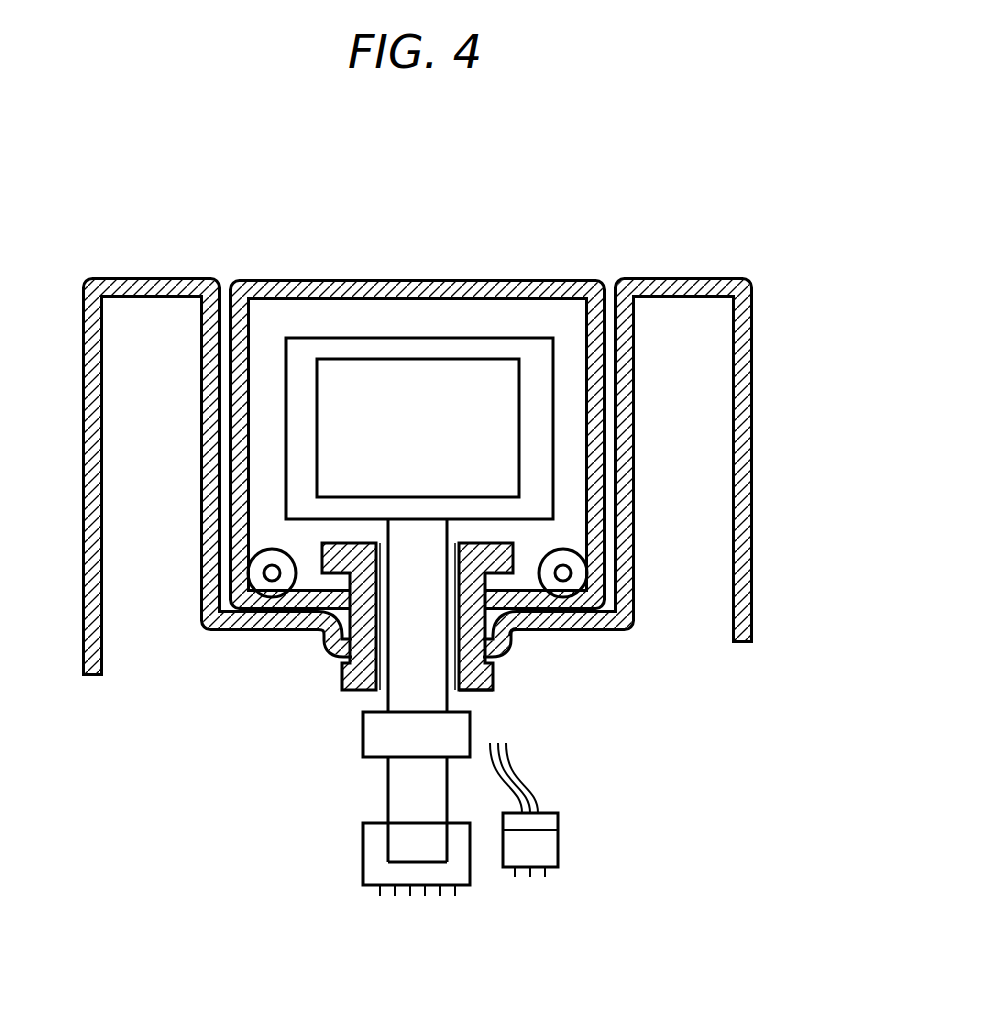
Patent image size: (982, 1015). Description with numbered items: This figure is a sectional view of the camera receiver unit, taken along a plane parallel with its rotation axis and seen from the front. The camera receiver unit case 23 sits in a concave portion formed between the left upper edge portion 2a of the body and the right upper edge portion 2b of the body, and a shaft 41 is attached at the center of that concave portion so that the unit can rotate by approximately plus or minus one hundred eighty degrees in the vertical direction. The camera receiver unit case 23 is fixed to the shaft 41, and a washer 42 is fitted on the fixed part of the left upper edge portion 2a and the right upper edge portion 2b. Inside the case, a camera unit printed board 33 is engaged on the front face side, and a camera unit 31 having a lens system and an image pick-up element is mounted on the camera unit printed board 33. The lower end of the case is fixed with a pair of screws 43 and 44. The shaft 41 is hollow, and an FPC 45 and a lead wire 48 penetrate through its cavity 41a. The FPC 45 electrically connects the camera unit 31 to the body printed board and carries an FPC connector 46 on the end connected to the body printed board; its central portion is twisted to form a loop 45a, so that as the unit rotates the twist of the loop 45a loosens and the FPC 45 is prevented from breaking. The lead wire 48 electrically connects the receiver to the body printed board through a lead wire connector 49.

The left upper edge portion of the body 2a is at (151, 280).
The right upper edge portion of the body 2b is at (681, 280).
The camera receiver unit case 23 is at (410, 282).
The camera unit 31 is at (476, 368).
The camera unit printed board 33 is at (321, 343).
The shaft 41 is at (517, 545).
The cavity 41a is at (455, 690).
The washer 42 is at (493, 647).
The screw 43 is at (272, 578).
The screw 44 is at (587, 632).
The FPC 45 is at (393, 800).
The loop 45a is at (373, 737).
The FPC connector 46 is at (462, 872).
The lead wire 48 is at (520, 762).
The lead wire connector 49 is at (547, 850).